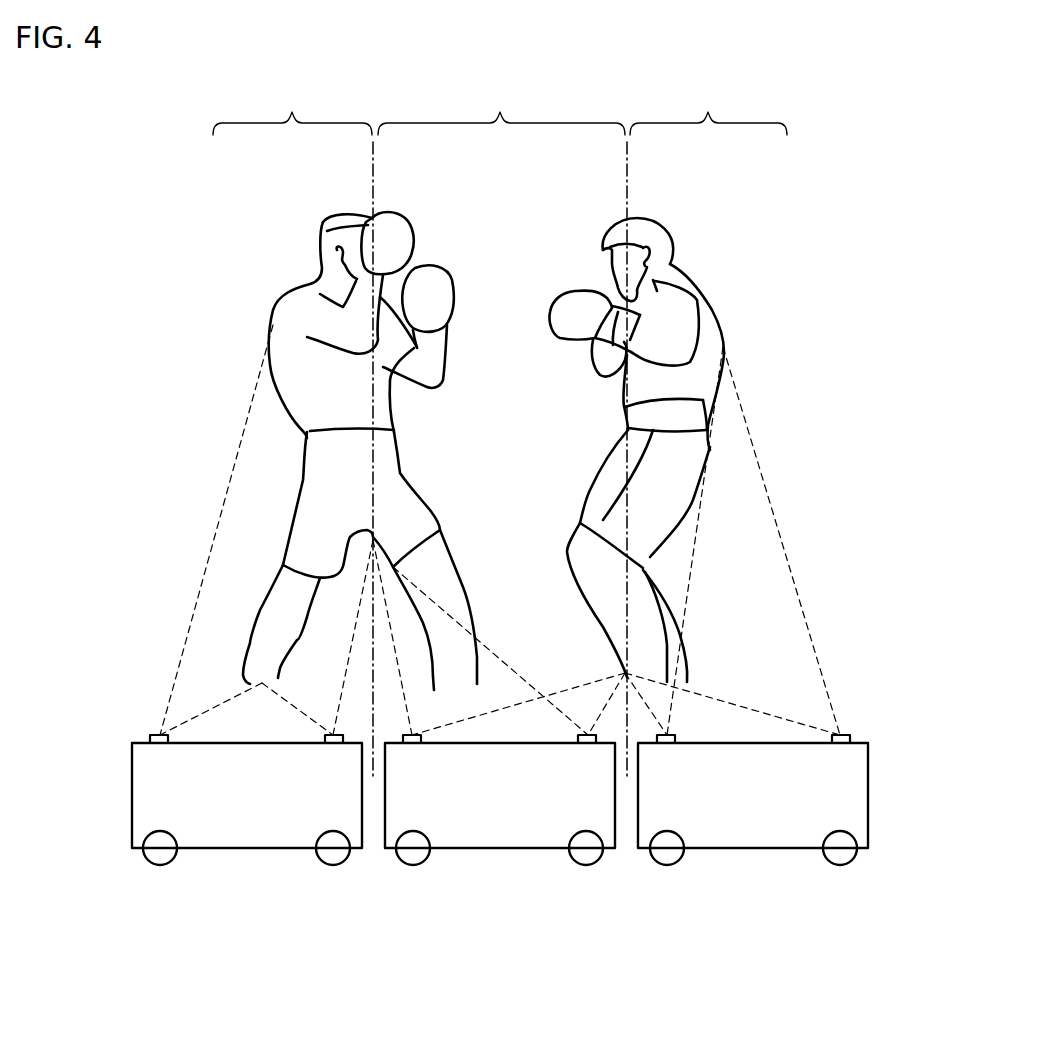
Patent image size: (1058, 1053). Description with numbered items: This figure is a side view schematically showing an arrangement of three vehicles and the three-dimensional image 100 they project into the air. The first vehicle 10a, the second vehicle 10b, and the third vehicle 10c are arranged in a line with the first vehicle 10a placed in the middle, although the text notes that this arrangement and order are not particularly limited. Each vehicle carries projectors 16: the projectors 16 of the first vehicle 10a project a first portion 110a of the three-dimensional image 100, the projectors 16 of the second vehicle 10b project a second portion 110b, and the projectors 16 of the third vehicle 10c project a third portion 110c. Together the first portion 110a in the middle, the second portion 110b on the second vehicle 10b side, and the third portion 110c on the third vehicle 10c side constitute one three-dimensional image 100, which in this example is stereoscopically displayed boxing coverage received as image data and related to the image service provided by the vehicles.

The three-dimensional image 100 is at (205, 276).
The first portion 110a is at (500, 432).
The second portion 110b is at (292, 109).
The third portion 110c is at (708, 109).
The projectors 16 is at (150, 737).
The first vehicle 10a is at (500, 850).
The second vehicle 10b is at (247, 850).
The third vehicle 10c is at (755, 850).